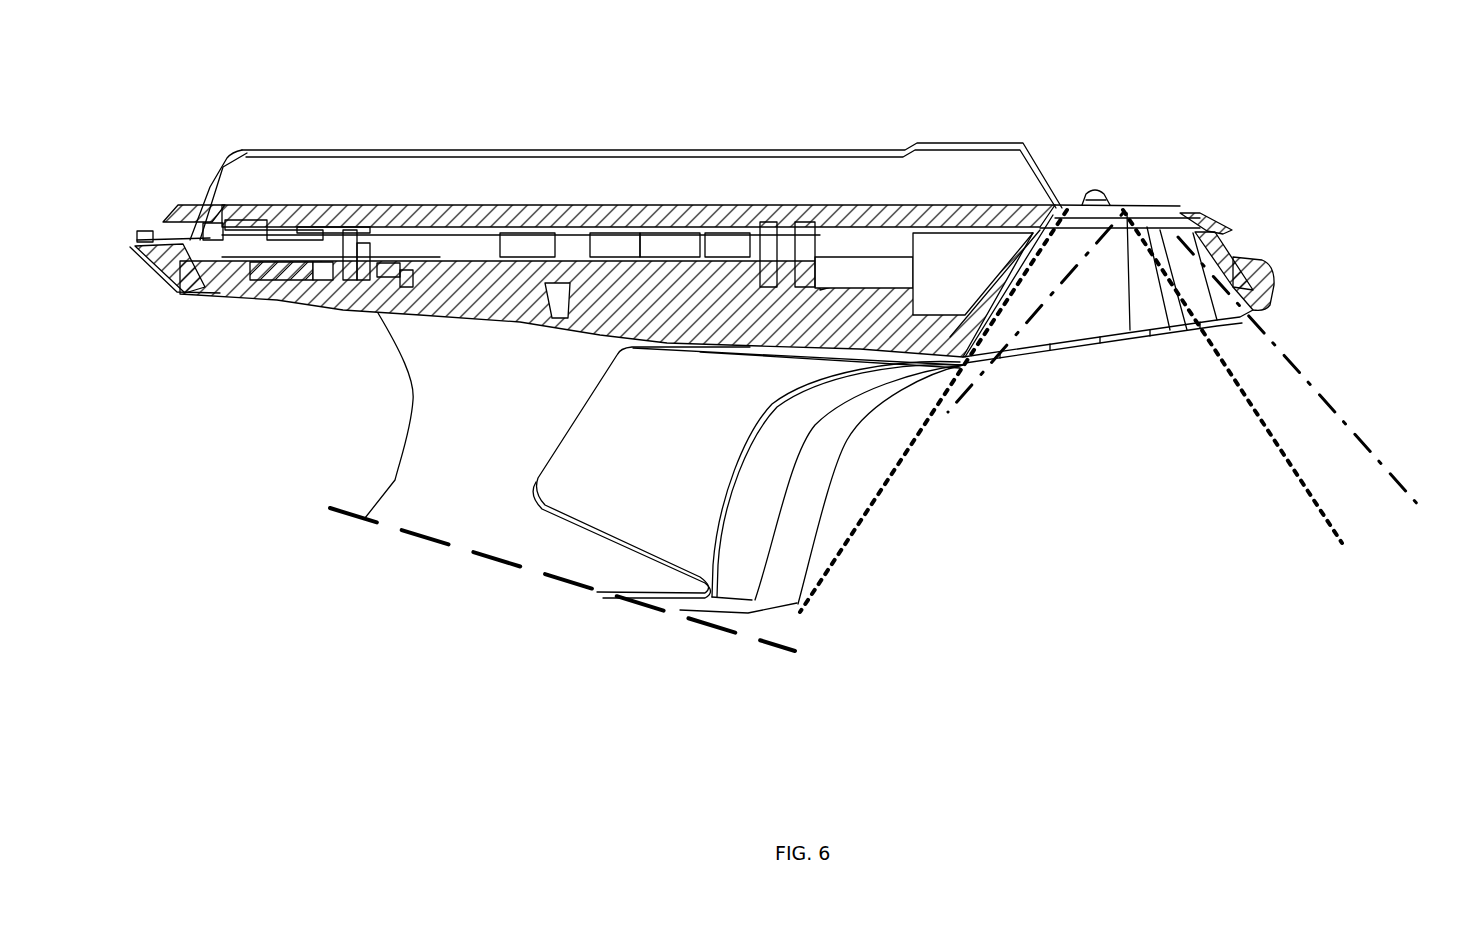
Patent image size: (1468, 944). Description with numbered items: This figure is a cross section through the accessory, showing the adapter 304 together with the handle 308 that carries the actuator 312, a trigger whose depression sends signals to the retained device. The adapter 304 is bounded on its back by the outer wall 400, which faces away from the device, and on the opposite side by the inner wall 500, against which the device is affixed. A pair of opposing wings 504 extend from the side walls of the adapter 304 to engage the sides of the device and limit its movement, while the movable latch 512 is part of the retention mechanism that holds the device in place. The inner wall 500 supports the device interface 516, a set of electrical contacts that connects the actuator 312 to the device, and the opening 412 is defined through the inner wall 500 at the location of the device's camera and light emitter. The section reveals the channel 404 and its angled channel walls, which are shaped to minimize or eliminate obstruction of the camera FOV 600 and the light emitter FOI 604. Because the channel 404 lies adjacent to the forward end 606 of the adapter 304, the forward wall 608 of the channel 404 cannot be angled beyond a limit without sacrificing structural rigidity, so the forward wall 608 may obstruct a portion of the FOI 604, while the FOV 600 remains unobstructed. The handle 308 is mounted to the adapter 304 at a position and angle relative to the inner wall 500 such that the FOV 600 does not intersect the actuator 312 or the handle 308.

The adapter 304 is at (229, 284).
The handle 308 is at (402, 490).
The actuator 312 is at (793, 487).
The outer wall 400 is at (383, 302).
The channel 404 is at (1080, 350).
The opening 412 is at (1173, 208).
The inner wall 500 is at (857, 210).
The wings 504 is at (413, 170).
The latch 512 is at (180, 203).
The device interface 516 is at (1090, 190).
The FOV 600 is at (883, 485).
The FOI 604 is at (1442, 533).
The forward end 606 is at (1287, 281).
The forward wall 608 is at (1213, 250).